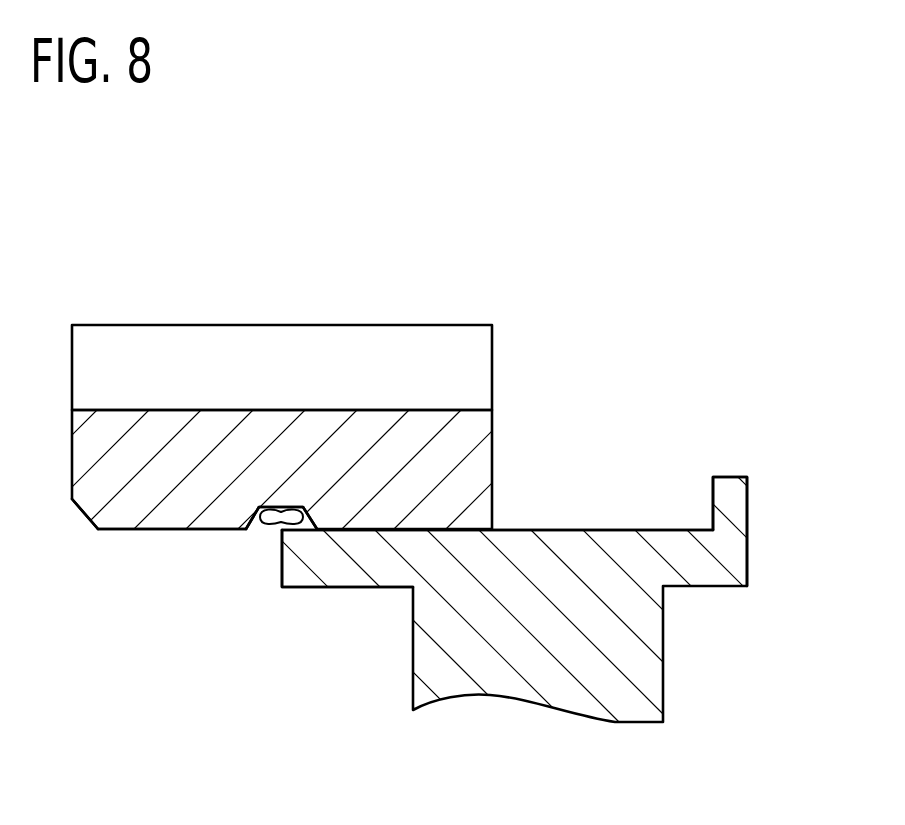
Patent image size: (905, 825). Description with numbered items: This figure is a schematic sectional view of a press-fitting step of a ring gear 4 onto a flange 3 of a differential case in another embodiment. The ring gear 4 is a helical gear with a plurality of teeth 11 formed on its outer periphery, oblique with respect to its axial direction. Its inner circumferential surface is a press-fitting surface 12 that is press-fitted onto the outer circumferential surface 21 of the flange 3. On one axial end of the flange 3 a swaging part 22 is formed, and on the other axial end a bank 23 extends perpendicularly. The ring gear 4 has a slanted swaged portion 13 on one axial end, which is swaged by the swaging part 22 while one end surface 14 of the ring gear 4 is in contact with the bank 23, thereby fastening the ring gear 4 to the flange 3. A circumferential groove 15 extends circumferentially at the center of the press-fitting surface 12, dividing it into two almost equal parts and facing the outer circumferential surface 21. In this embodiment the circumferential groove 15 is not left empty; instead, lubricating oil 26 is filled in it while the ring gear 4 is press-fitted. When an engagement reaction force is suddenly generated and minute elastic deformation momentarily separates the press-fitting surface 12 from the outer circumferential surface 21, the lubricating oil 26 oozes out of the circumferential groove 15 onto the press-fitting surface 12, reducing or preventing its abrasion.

The flange 3 is at (561, 599).
The ring gear 4 is at (286, 467).
The teeth 11 is at (410, 338).
The press-fitting surface 12 is at (120, 530).
The swaged portion 13 is at (80, 512).
The one end surface 14 is at (285, 516).
The circumferential groove 15 is at (252, 528).
The outer circumferential surface 21 is at (673, 530).
The swaging part 22 is at (295, 578).
The bank 23 is at (740, 497).
The lubricating oil 26 is at (270, 520).